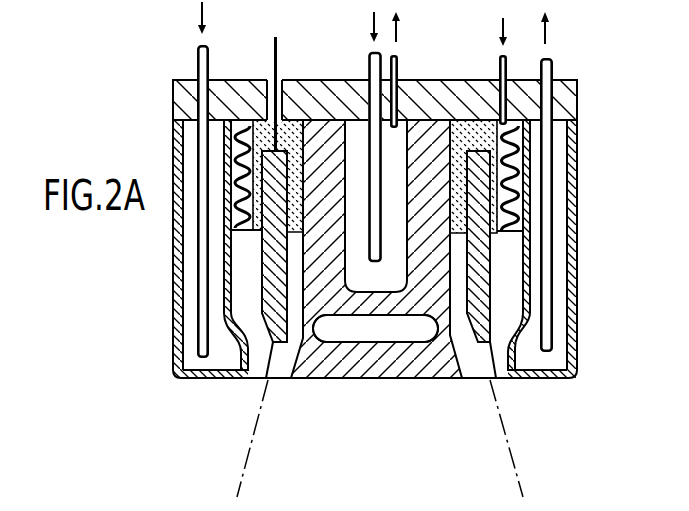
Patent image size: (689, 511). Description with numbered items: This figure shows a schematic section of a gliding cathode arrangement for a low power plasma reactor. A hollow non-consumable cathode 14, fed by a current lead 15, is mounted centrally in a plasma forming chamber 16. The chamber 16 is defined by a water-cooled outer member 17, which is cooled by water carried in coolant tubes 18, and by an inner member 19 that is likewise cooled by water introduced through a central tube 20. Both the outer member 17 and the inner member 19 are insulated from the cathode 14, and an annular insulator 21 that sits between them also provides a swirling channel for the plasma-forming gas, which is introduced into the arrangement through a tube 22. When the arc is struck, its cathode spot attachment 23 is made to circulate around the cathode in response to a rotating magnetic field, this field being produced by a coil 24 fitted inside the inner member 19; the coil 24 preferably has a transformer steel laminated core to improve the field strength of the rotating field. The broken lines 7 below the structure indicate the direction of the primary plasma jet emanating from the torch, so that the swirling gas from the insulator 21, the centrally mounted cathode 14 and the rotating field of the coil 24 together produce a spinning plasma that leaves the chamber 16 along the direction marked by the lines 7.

The broken lines indicating direction of primary plasma jets 7 is at (498, 432).
The hollow non-consumable cathode 14 is at (263, 287).
The current lead 15 is at (274, 50).
The plasma forming chamber 16 is at (503, 315).
The water-cooled outer member 17 is at (579, 213).
The coolant tubes 18 is at (197, 62).
The inner member 19 is at (422, 133).
The central tube 20 is at (368, 62).
The annular insulator 21 is at (228, 236).
The tube 22 is at (500, 62).
The cathode spot attachment 23 is at (481, 347).
The coil 24 is at (377, 334).